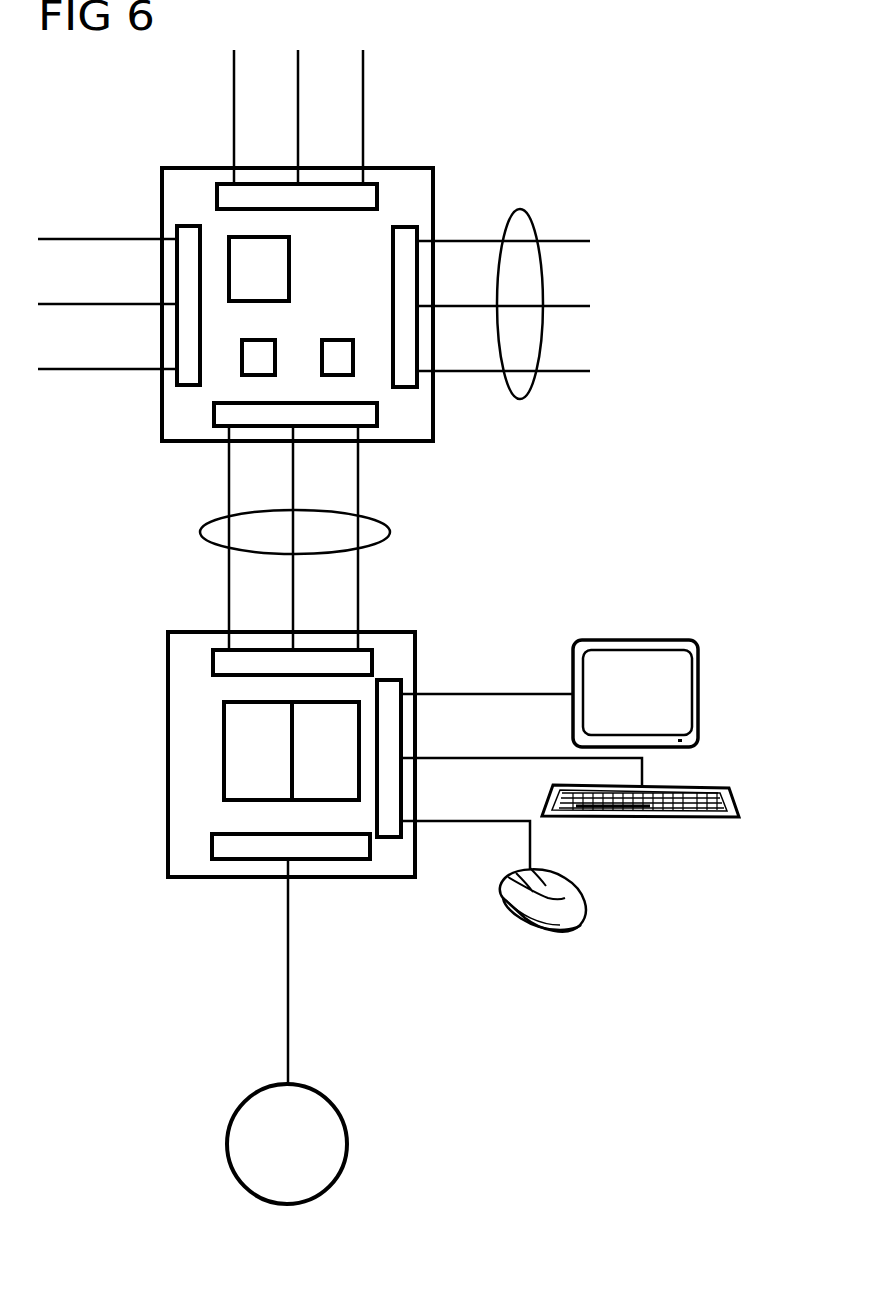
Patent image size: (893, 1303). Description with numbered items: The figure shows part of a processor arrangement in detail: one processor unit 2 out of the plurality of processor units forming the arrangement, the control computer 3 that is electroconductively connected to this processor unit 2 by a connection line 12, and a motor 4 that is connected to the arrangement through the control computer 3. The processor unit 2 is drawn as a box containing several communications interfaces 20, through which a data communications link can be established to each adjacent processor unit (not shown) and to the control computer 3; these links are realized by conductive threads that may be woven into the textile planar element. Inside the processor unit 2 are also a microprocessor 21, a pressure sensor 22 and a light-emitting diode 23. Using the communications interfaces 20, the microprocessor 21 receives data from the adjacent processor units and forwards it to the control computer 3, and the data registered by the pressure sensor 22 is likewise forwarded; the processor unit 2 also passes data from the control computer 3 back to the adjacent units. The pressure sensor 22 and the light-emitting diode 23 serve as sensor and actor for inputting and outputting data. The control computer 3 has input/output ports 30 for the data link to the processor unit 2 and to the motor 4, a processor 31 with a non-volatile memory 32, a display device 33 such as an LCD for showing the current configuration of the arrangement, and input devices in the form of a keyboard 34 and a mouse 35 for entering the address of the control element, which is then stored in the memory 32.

The processor unit 2 is at (195, 168).
The control computer 3 is at (168, 666).
The motor 4 is at (346, 1140).
The connection line 12 is at (520, 210).
The communications interfaces 20 is at (405, 227).
The microprocessor 21 is at (278, 286).
The pressure sensor 22 is at (257, 350).
The light-emitting diode 23 is at (342, 350).
The input/output ports 30 is at (389, 680).
The processor 31 is at (273, 769).
The non-volatile memory 32 is at (342, 769).
The display device 33 is at (645, 640).
The keyboard 34 is at (738, 798).
The mouse 35 is at (588, 893).